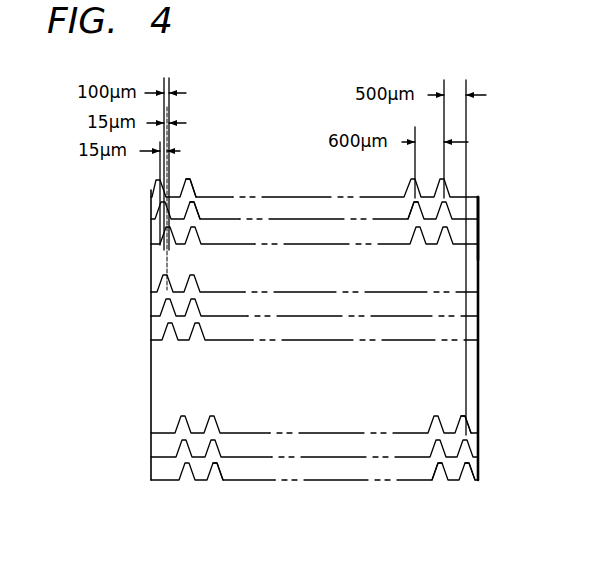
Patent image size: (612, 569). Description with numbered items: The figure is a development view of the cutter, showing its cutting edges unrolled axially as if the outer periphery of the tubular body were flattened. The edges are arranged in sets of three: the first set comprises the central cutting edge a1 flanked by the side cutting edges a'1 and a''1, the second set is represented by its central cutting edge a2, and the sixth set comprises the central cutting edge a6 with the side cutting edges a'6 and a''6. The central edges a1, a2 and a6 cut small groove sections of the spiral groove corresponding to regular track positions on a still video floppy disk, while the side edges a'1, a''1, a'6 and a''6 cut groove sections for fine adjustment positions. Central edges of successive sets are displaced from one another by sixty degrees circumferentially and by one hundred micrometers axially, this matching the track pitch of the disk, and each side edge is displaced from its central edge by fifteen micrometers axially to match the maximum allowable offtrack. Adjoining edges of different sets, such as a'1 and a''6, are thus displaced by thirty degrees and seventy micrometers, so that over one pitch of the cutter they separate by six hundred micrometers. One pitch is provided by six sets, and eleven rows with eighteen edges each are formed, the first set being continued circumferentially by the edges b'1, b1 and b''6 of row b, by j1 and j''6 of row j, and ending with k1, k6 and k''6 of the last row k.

The cutting edge a'1 is at (289, 193).
The cutting edge a1 is at (156, 208).
The cutting edge a''1 is at (289, 245).
The cutting edge a2 is at (167, 331).
The cutting edge a'6 is at (289, 432).
The cutting edge a6 is at (179, 447).
The cutting edge a''6 is at (289, 479).
The cutting edge b'1 is at (211, 169).
The cutting edge b1 is at (194, 214).
The cutting edge b''6 is at (240, 487).
The cutting edge j1 is at (408, 216).
The cutting edge j''6 is at (426, 494).
The cutting edge k1 is at (450, 215).
The cutting edge k6 is at (466, 448).
The cutting edge k''6 is at (496, 475).